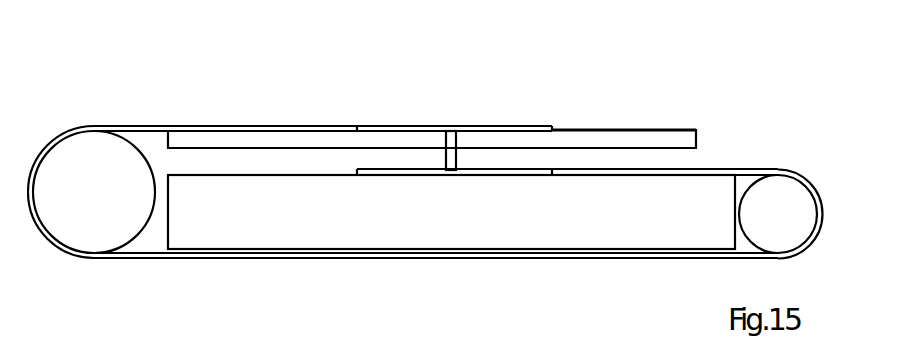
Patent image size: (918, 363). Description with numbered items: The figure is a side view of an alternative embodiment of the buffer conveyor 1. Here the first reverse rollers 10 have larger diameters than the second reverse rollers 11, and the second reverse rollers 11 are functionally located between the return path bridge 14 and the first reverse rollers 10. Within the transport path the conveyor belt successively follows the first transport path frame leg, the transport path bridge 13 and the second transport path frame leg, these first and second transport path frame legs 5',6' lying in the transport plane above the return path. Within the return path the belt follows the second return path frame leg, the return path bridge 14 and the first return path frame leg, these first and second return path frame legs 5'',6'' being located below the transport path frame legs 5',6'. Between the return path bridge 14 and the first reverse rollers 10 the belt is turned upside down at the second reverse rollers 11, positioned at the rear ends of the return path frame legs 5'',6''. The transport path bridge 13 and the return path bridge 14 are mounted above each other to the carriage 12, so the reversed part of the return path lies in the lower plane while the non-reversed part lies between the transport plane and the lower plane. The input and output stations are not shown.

The buffer conveyor 1 is at (775, 105).
The first reverse rollers 10 is at (93, 146).
The second reverse rollers 11 is at (768, 195).
The first and second transport path frame legs 5',6' is at (432, 96).
The first and second return path frame legs 5'',6'' is at (451, 147).
The carriage 12 is at (450, 133).
The transport path bridge 13 is at (375, 125).
The return path bridge 14 is at (493, 170).